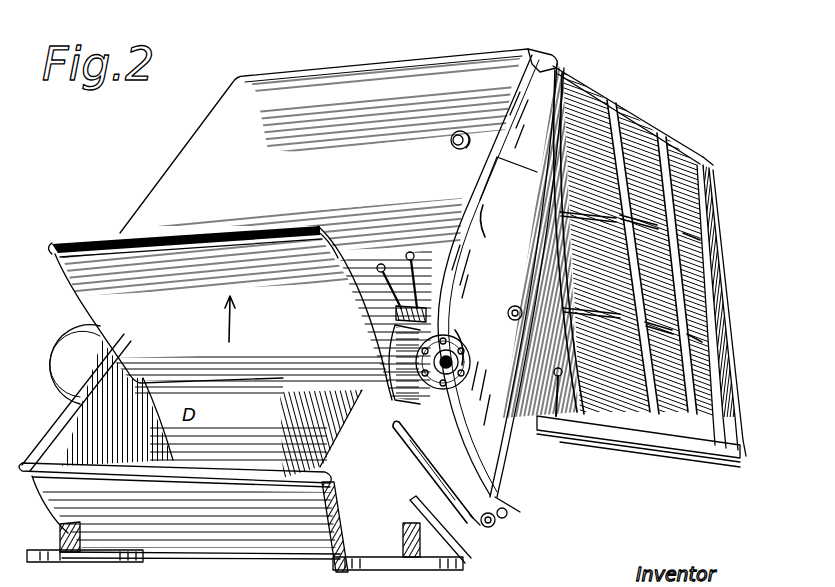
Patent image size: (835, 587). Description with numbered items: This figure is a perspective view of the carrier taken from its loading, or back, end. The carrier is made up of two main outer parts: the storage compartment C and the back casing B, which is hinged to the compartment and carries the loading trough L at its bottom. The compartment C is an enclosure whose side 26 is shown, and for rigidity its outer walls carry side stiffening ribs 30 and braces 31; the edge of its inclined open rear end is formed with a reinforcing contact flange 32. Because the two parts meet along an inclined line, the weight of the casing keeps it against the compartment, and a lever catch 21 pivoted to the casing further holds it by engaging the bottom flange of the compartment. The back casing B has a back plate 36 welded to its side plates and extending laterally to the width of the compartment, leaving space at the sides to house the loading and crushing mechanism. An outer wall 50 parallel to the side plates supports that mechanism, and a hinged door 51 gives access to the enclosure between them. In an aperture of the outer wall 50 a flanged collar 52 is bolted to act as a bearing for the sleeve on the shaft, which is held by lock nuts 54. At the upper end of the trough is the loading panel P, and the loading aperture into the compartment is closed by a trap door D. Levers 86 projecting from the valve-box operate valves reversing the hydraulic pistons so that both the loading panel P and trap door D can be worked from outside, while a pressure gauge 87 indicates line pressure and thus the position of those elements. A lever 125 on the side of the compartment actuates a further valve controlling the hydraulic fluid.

The back casing B is at (158, 179).
The back plate 36 is at (366, 90).
The outer wall 50 is at (547, 58).
The hinged door 51 is at (500, 183).
The pressure gauge 87 is at (451, 146).
The flanged collar 52 is at (452, 332).
The lock nuts 54 is at (457, 355).
The levers 86 is at (398, 280).
The loading panel P is at (62, 240).
The trap door D is at (245, 517).
The loading trough L is at (204, 556).
The lever catch 21 is at (432, 473).
The reinforcing contact flange 32 is at (507, 512).
The storage compartment C is at (622, 280).
The side 26 is at (584, 123).
The braces 31 is at (673, 165).
The side stiffening ribs 30 is at (688, 238).
The lever 125 is at (560, 432).